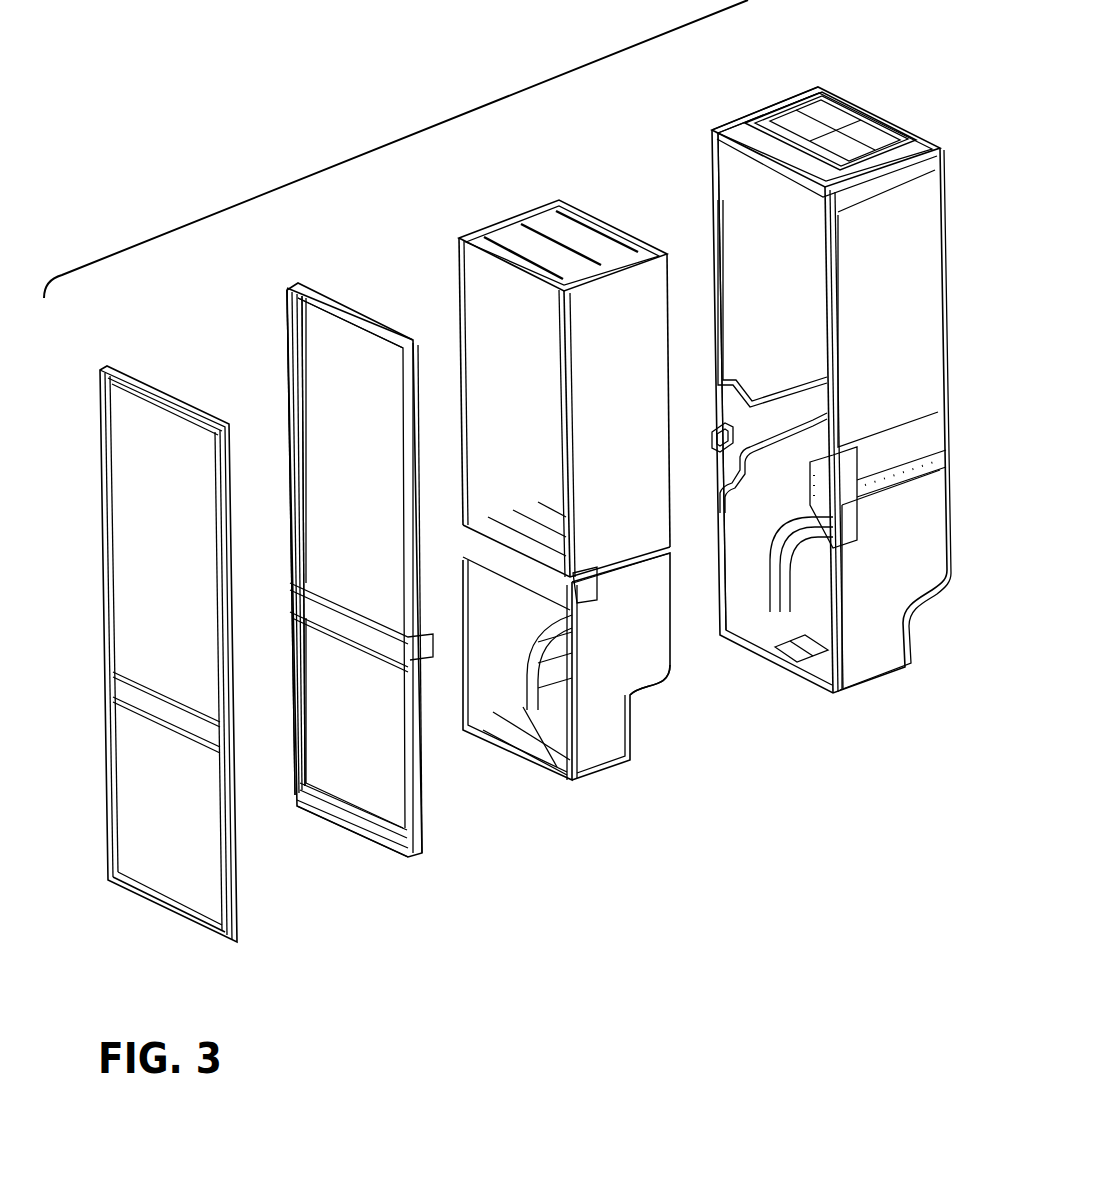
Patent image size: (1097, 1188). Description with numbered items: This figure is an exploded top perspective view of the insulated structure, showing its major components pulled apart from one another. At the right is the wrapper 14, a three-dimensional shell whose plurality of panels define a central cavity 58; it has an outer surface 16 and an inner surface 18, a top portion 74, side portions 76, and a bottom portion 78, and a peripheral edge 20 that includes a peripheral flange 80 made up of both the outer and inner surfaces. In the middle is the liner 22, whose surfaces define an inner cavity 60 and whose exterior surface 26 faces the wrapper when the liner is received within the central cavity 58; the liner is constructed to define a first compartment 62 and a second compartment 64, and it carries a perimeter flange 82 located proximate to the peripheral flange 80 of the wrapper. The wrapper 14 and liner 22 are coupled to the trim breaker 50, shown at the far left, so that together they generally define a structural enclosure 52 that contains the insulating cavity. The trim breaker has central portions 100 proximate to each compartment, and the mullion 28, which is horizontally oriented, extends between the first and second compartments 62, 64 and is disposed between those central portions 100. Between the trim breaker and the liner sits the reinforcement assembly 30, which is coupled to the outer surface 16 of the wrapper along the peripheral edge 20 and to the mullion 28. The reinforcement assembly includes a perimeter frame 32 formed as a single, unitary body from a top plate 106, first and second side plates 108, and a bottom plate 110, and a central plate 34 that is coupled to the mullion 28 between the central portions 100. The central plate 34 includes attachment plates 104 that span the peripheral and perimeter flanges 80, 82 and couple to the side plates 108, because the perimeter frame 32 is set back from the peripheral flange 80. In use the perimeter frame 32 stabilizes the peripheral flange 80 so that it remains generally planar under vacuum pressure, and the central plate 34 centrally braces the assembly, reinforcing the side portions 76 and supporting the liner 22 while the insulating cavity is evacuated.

The wrapper 14 is at (795, 395).
The outer surface 16 is at (913, 257).
The inner surface 18 is at (745, 197).
The peripheral edge 20 is at (805, 170).
The liner 22 is at (530, 391).
The exterior surface 26 is at (637, 630).
The mullion 28 is at (589, 701).
The reinforcement assembly 30 is at (337, 557).
The perimeter frame 32 is at (320, 295).
The central plate 34 is at (340, 623).
The trim breaker 50 is at (140, 625).
The structural enclosure 52 is at (465, 112).
The central cavity 58 is at (757, 240).
The inner cavity 60 is at (500, 293).
The first compartment 62 is at (520, 397).
The second compartment 64 is at (523, 635).
The top portion 74 is at (790, 97).
The side portions 76 is at (873, 360).
The bottom portion 78 is at (777, 632).
The peripheral flange 80 is at (740, 137).
The perimeter flange 82 is at (495, 253).
The central portions 100 is at (143, 683).
The attachment plates 104 is at (320, 573).
The top plate 106 is at (347, 305).
The side plates 108 is at (290, 435).
The bottom plate 110 is at (320, 807).